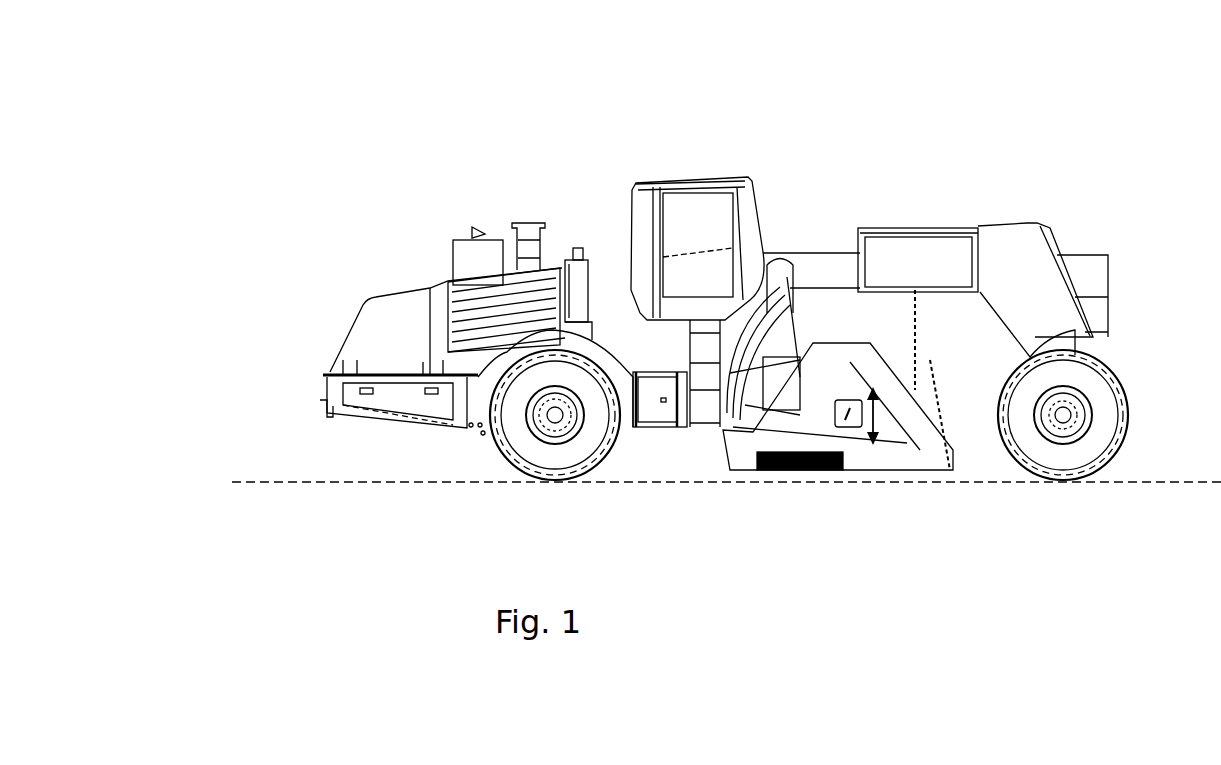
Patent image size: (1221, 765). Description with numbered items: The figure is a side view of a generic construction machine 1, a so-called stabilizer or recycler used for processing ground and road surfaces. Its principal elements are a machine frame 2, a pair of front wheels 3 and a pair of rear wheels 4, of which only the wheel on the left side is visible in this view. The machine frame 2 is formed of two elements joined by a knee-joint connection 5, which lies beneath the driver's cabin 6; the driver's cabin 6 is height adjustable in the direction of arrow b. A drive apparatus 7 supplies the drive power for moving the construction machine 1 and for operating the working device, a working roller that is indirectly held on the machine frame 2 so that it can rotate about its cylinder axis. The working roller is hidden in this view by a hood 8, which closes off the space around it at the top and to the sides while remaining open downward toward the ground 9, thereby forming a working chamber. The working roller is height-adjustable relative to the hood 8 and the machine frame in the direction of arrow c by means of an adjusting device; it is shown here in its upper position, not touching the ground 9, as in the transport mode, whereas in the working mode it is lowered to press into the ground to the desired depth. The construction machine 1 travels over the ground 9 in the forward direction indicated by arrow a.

The construction machine 1 is at (1100, 203).
The machine frame 2 is at (837, 272).
The front wheels 3 is at (540, 447).
The rear wheels 4 is at (1095, 447).
The knee-joint connection 5 is at (679, 418).
The driver's cabin 6 is at (683, 212).
The drive apparatus 7 is at (470, 330).
The hood 8 is at (907, 413).
The ground 9 is at (257, 482).
The arrow a is at (318, 247).
The arrow b is at (697, 282).
The arrow c is at (825, 470).